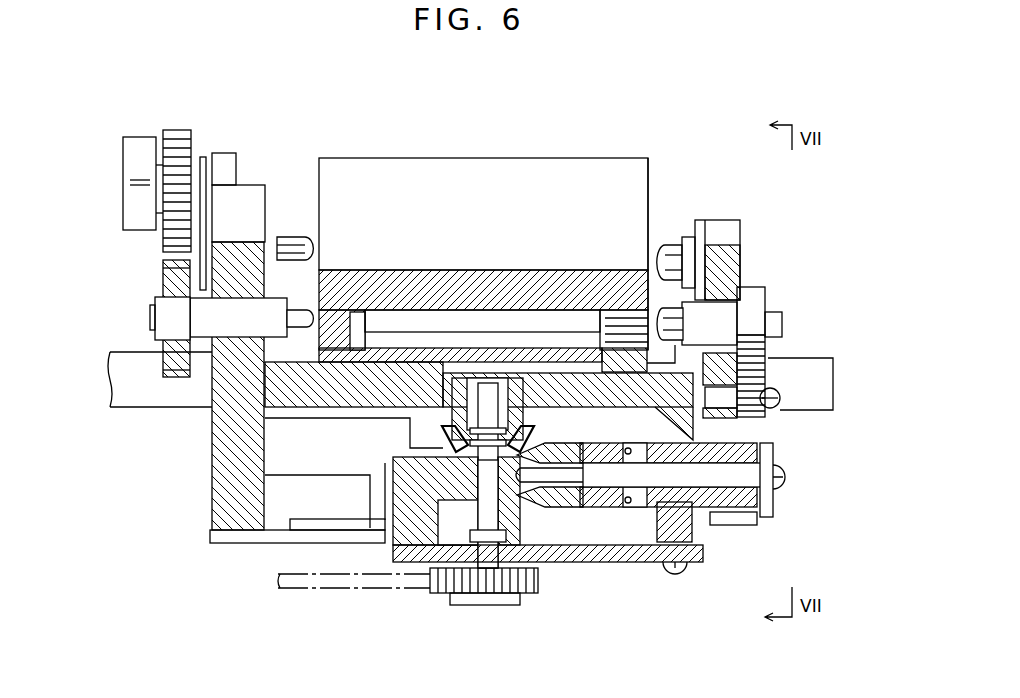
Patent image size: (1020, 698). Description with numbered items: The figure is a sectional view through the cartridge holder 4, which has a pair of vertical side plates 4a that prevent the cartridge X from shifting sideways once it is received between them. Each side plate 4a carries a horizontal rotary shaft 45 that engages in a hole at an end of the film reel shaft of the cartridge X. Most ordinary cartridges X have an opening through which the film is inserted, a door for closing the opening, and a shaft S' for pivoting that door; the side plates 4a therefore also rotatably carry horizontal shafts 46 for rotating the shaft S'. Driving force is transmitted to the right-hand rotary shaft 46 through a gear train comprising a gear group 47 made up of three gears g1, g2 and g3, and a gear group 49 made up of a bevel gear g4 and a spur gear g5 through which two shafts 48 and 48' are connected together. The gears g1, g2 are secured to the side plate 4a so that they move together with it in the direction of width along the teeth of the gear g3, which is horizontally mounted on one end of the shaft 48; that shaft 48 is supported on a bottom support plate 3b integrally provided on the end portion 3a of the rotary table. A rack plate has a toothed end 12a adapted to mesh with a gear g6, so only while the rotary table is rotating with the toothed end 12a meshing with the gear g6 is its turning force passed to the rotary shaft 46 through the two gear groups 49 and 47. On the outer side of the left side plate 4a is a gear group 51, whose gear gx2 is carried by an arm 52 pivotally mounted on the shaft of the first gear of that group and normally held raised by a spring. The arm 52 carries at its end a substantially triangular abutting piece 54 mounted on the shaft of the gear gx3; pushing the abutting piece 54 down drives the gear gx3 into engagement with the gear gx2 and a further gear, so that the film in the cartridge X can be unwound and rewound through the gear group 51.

The abutting piece 54 is at (137, 145).
The arm 52 is at (201, 157).
The side plate 4a is at (248, 195).
The rotary shaft 45 is at (300, 250).
The horizontal shaft 46 is at (297, 325).
The gear gx3 is at (168, 225).
The gear gx2 is at (170, 290).
The gear group 51 is at (94, 337).
The cartridge X is at (497, 170).
The shaft S' is at (624, 254).
The end portion 3a is at (345, 395).
The bottom support plate 3b is at (690, 530).
The spur gear g5 is at (525, 420).
The bevel gear g4 is at (560, 505).
The shaft 48' is at (490, 530).
The shaft 48 is at (682, 523).
The gear g6 is at (442, 595).
The toothed end 12a is at (348, 588).
The gear group 49 is at (562, 606).
The gear g3 is at (745, 520).
The gear g1 is at (762, 342).
The gear g2 is at (770, 408).
The gear group 47 is at (840, 562).
The cartridge holder 4 is at (705, 195).